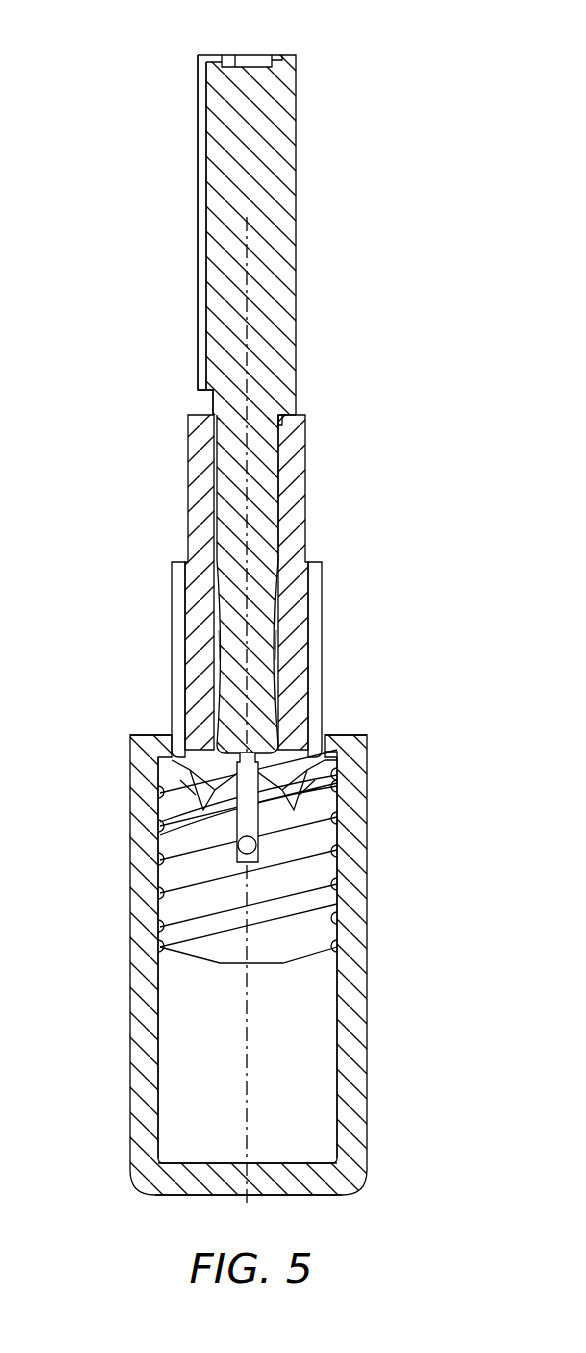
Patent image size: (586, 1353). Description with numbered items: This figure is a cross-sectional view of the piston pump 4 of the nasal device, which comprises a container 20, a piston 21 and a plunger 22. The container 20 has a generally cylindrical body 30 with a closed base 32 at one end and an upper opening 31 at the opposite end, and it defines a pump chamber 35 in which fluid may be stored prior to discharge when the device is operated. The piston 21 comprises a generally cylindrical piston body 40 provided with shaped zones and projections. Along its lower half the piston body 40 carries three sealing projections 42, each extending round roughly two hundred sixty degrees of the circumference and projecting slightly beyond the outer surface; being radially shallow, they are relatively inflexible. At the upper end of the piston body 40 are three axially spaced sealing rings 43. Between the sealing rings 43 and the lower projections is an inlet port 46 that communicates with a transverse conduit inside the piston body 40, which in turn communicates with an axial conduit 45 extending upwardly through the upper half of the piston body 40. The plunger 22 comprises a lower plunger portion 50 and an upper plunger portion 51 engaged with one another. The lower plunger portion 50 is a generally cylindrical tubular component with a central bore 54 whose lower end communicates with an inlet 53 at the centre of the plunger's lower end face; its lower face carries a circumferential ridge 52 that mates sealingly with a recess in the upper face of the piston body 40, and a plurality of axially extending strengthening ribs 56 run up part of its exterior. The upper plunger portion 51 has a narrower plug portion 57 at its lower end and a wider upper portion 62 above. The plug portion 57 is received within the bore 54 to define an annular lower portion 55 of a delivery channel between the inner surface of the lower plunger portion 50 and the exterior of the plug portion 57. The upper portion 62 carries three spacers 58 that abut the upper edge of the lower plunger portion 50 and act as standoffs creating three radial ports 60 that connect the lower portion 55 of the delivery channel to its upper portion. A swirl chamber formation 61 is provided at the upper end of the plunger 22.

The piston pump 4 is at (278, 378).
The container 20 is at (268, 957).
The piston 21 is at (320, 875).
The plunger 22 is at (278, 591).
The cylindrical body 30 is at (355, 1055).
The upper opening 31 is at (342, 718).
The closed base 32 is at (213, 1190).
The pump chamber 35 is at (180, 1047).
The piston body 40 is at (222, 945).
The sealing projections 42 is at (158, 905).
The sealing rings 43 is at (152, 802).
The axial conduit 45 is at (158, 847).
The inlet port 46 is at (260, 847).
The lower plunger portion 50 is at (300, 648).
The upper plunger portion 51 is at (207, 250).
The circumferential ridge 52 is at (180, 742).
The inlet 53 is at (340, 753).
The bore 54 is at (218, 640).
The lower portion of delivery channel 55 is at (215, 593).
The strengthening ribs 56 is at (318, 598).
The plug portion 57 is at (262, 479).
The spacers 58 is at (290, 404).
The radial ports 60 is at (188, 400).
The swirl chamber formation 61 is at (226, 48).
The upper portion 62 is at (300, 199).